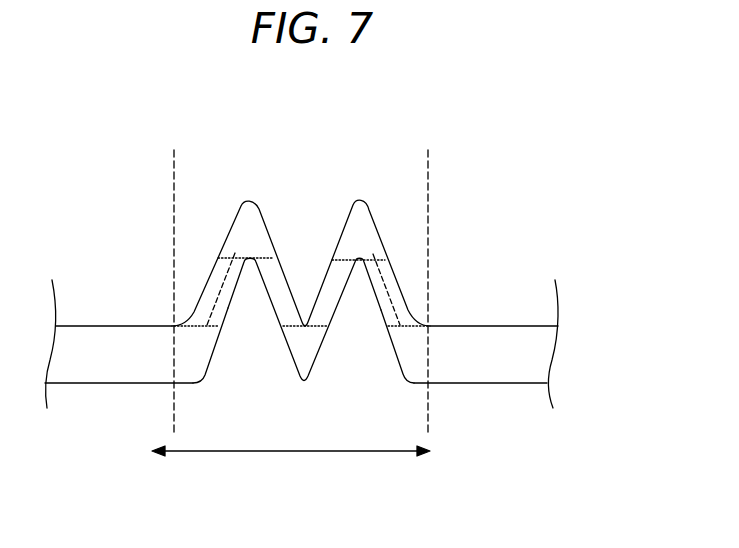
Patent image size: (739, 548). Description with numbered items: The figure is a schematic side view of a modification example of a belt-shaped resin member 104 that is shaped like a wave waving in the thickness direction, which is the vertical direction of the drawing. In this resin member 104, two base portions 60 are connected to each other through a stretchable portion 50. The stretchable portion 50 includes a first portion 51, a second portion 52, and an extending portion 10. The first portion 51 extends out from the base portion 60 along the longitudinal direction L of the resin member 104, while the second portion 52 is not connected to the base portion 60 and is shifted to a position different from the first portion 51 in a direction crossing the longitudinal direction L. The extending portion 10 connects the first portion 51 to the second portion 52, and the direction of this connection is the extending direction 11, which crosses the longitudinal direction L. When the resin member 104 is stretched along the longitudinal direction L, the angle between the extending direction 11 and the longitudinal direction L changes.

The resin member 104 is at (562, 189).
The base portion 60 is at (113, 326).
The stretchable portion 50 is at (174, 147).
The second portion 52 is at (252, 233).
The extending portion 10 is at (229, 294).
The first portion 51 is at (205, 340).
The extending direction 11 is at (235, 257).
The longitudinal direction L is at (433, 451).